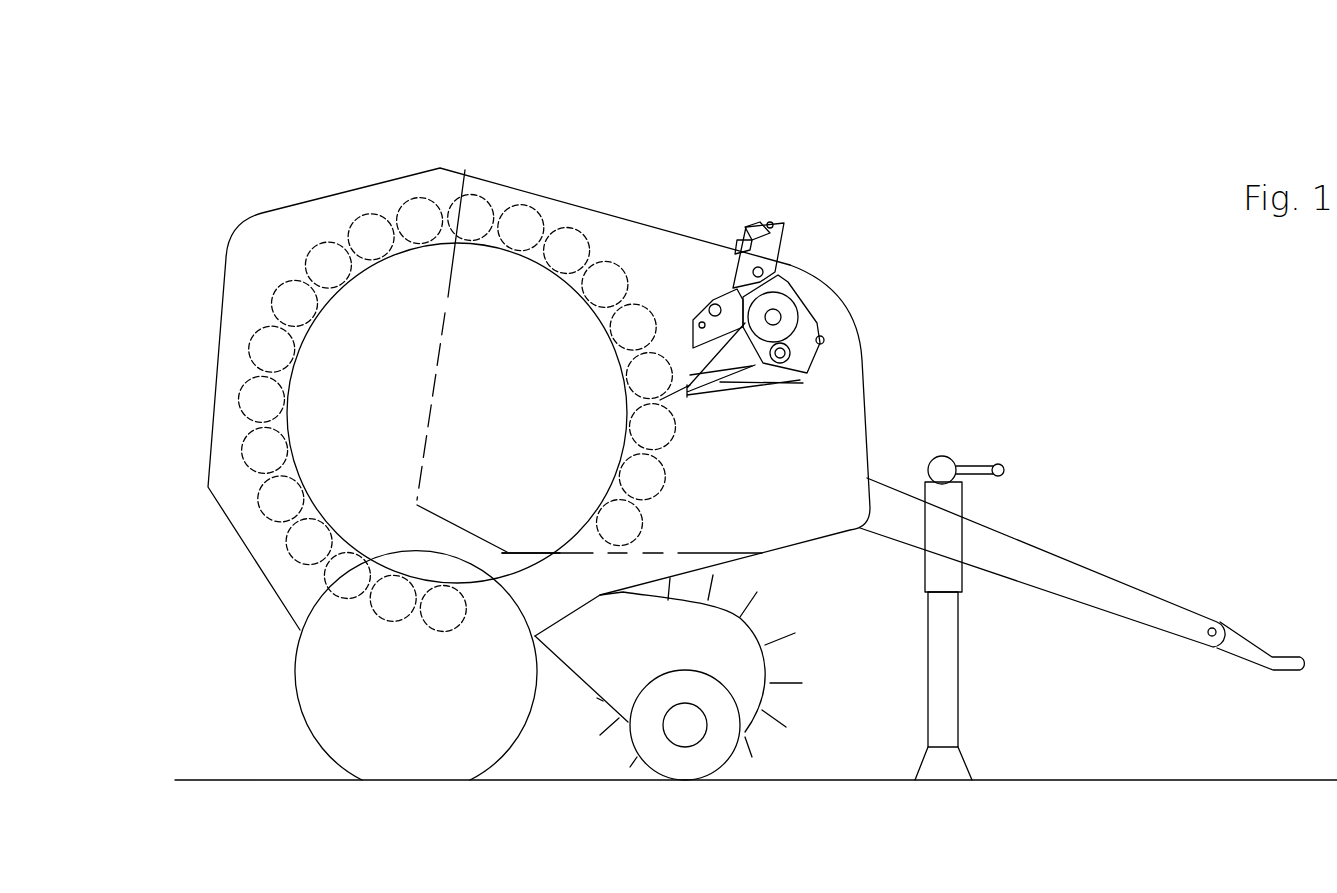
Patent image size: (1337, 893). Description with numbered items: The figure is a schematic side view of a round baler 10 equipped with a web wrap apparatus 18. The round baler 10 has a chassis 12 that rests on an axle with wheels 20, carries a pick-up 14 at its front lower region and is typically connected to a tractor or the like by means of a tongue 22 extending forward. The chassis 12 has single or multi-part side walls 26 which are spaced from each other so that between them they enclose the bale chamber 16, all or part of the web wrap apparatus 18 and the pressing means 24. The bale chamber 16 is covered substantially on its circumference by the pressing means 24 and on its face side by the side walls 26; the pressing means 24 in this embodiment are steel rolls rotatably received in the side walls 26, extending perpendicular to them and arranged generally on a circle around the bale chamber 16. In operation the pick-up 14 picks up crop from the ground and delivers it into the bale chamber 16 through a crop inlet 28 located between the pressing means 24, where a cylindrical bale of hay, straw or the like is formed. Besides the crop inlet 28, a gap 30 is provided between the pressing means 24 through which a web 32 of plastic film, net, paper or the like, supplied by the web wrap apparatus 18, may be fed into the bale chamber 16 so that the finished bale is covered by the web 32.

The round baler 10 is at (948, 270).
The chassis 12 is at (268, 272).
The pick-up 14 is at (818, 634).
The bale chamber 16 is at (383, 398).
The web wrap apparatus 18 is at (828, 236).
The wheels 20 is at (528, 757).
The tongue 22 is at (1125, 597).
The pressing means 24 is at (348, 233).
The side walls 26 is at (833, 450).
The crop inlet 28 is at (552, 580).
The gap 30 is at (730, 378).
The web 32 is at (680, 393).